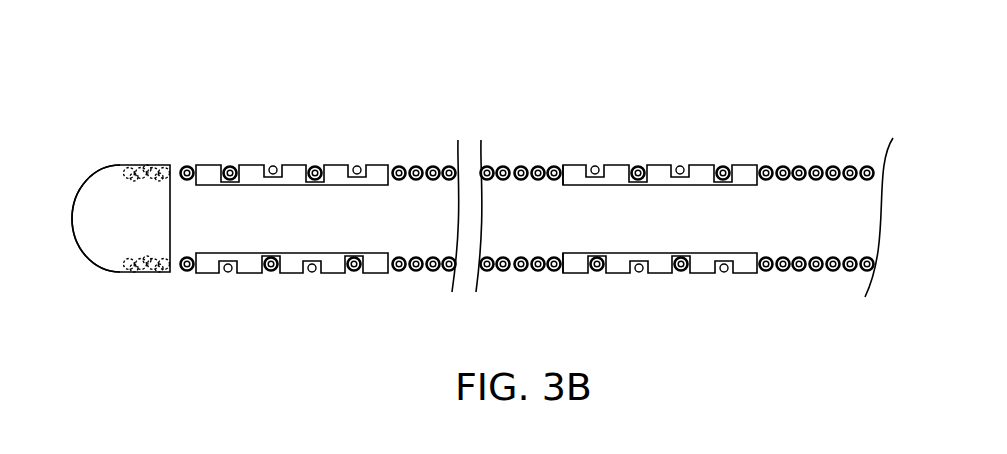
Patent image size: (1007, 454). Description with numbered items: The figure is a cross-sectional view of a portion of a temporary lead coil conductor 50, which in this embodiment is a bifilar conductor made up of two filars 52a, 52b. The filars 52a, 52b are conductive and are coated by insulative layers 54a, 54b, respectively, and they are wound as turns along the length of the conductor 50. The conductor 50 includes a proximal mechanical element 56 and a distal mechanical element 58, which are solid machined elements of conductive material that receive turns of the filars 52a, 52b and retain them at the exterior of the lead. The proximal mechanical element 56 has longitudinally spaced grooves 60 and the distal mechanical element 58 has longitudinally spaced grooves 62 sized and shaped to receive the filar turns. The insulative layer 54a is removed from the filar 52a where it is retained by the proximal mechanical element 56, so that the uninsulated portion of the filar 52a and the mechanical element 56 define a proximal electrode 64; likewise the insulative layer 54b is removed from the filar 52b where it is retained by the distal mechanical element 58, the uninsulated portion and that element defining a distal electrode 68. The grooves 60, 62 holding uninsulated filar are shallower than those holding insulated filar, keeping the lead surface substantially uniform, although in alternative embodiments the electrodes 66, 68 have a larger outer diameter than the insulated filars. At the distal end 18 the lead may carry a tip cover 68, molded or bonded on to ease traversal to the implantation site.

The distal end 18 is at (88, 142).
The temporary lead coil conductor 50 is at (625, 65).
The filar 52a is at (312, 165).
The filar 52b is at (357, 165).
The insulative layer 54a is at (817, 273).
The insulative layer 54b is at (797, 273).
The proximal mechanical element 56 is at (572, 172).
The distal mechanical element 58 is at (206, 170).
The grooves 60 is at (640, 282).
The grooves 62 is at (272, 281).
The proximal electrode 64 is at (560, 120).
The electrode 66 is at (188, 135).
The distal electrode 68 is at (93, 250).